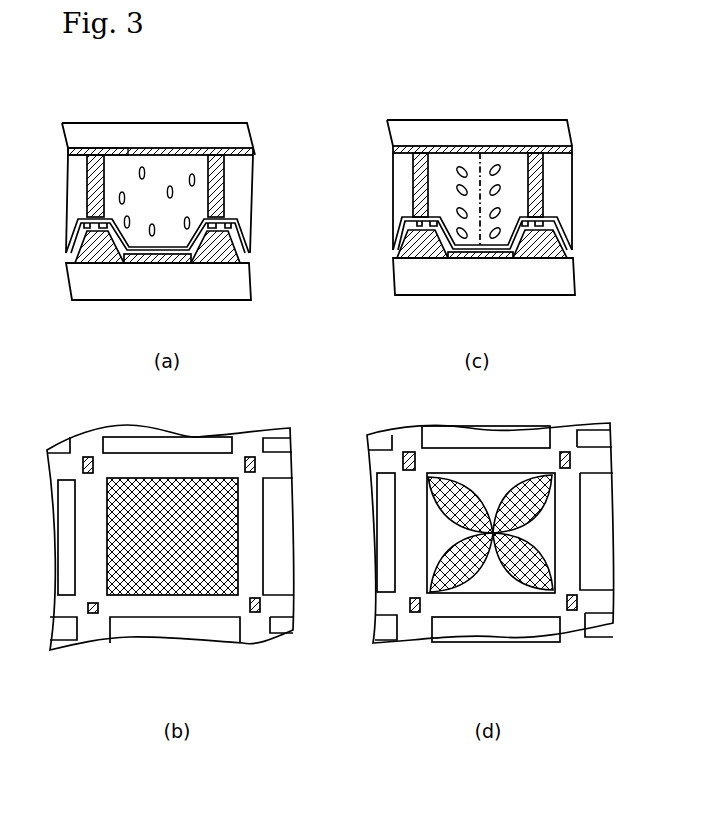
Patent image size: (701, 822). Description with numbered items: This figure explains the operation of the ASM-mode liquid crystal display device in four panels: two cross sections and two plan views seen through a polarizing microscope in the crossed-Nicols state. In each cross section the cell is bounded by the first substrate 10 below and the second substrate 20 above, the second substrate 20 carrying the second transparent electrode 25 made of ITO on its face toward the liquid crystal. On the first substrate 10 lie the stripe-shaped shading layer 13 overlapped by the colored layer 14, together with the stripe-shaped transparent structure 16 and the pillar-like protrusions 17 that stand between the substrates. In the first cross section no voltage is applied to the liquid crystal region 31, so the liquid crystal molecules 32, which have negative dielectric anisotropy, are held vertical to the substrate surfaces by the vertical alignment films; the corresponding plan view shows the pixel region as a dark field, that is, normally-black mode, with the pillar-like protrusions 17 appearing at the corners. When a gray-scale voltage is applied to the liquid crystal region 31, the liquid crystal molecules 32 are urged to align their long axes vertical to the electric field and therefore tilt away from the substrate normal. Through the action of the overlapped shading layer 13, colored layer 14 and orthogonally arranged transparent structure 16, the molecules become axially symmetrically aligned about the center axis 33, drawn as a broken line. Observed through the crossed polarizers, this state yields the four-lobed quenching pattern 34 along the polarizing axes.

The first substrate 10 is at (263, 244).
The shading layer 13 is at (215, 257).
The colored layer 14 is at (137, 258).
The transparent structure 16 is at (67, 238).
The pillar-like protrusions 17 is at (88, 203).
The second substrate 20 is at (257, 122).
The second transparent electrode 25 is at (90, 148).
The liquid crystal region 31 is at (197, 202).
The liquid crystal molecules 32 is at (172, 188).
The center axis 33 is at (477, 153).
The quenching pattern 34 is at (468, 583).